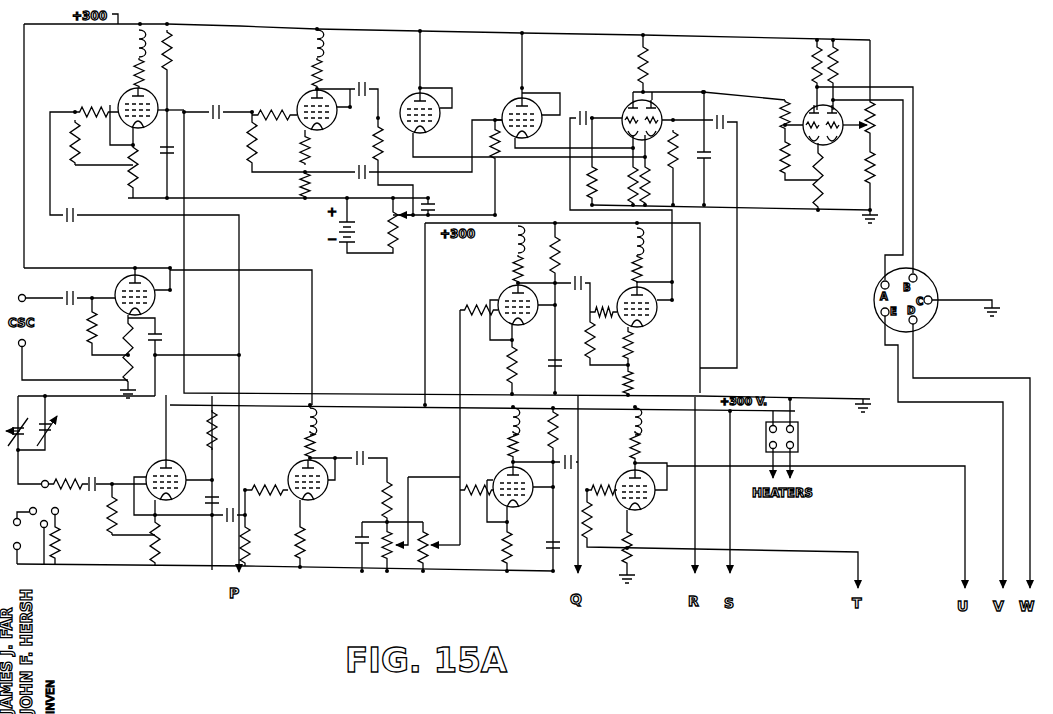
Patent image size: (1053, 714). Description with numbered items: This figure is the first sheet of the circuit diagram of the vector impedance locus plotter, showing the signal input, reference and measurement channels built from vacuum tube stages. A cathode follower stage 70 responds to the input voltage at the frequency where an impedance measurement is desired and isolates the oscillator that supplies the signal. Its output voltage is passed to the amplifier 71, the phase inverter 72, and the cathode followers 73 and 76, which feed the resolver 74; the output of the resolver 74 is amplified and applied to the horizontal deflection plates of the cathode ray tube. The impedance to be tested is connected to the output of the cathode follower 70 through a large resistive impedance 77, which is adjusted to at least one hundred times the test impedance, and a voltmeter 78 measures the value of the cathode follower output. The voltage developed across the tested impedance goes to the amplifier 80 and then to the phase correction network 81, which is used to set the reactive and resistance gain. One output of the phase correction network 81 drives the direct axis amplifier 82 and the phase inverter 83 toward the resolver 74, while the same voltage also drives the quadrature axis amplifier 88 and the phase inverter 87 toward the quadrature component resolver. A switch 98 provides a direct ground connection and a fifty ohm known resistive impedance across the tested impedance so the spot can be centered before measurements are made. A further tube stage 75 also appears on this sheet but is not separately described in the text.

The cathode follower stage 70 is at (137, 271).
The amplifier 71 is at (188, 110).
The phase inverter 72 is at (322, 92).
The cathode follower 73 is at (424, 90).
The resolver 74 is at (662, 96).
The 6SL7 tube 75 is at (818, 96).
The cathode follower 76 is at (527, 88).
The resistive impedance 77 is at (36, 440).
The voltmeter 78 is at (166, 462).
The amplifier 80 is at (320, 450).
The phase correction network 81 is at (436, 530).
The direct axis amplifier 82 is at (512, 290).
The phase inverter 83 is at (655, 322).
The phase inverter 87 is at (638, 460).
The quadrature axis amplifier 88 is at (507, 465).
The switch 98 is at (46, 516).